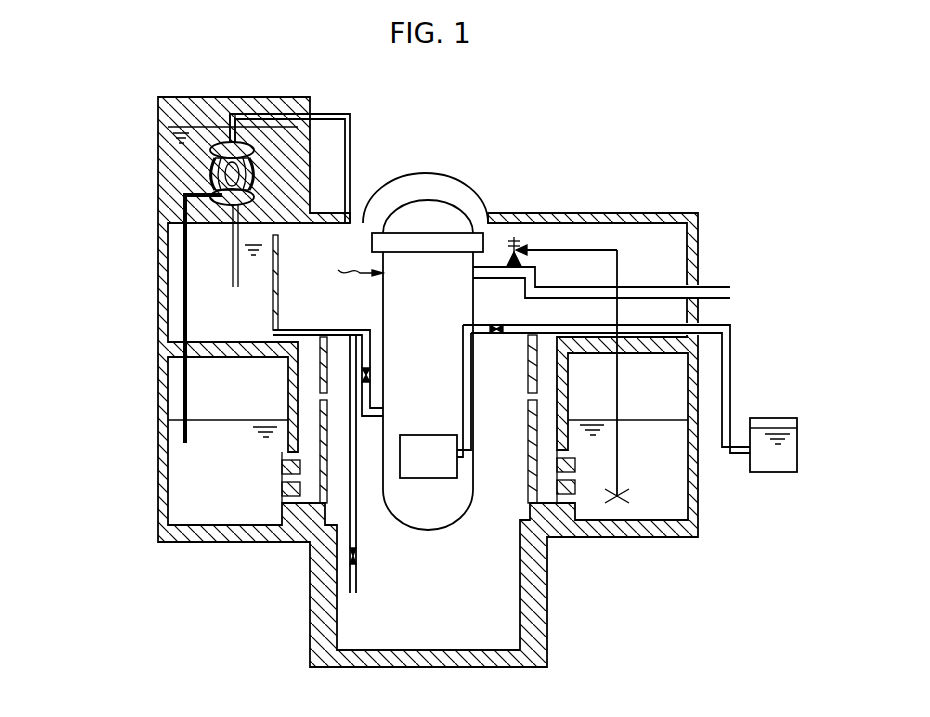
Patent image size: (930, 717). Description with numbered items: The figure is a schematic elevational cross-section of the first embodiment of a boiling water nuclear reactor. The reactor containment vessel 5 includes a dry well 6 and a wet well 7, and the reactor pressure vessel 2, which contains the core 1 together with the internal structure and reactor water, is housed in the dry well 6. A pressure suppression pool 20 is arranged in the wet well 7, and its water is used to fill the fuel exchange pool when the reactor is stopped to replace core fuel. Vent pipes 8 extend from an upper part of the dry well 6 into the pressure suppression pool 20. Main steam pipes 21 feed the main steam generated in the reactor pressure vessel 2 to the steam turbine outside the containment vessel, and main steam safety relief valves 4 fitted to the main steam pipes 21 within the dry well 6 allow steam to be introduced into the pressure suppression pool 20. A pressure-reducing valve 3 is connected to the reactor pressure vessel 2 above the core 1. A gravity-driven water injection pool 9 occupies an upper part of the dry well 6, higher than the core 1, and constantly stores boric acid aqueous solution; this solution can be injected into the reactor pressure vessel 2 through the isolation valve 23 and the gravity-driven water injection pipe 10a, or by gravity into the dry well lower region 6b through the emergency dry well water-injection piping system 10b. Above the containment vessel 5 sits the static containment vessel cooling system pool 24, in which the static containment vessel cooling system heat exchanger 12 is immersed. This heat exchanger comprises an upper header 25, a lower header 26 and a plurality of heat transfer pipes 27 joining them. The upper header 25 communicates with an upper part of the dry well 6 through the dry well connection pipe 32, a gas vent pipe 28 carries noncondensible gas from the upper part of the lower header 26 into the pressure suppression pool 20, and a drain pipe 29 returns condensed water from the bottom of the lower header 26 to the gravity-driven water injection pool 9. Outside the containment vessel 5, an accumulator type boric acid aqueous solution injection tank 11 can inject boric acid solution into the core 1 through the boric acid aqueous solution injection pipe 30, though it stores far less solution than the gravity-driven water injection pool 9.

The core 1 is at (420, 441).
The reactor pressure vessel 2 is at (383, 327).
The pressure-reducing valve 3 is at (352, 272).
The main steam safety relief valve 4 is at (530, 253).
The reactor containment vessel 5 is at (428, 382).
The dry well 6 is at (428, 382).
The dry well lower region 6b is at (498, 595).
The wet well 7 is at (653, 405).
The vent pipe 8 is at (546, 384).
The gravity-driven water injection pool 9 is at (177, 305).
The gravity-driven water injection pipe 10a is at (367, 403).
The emergency dry well water-injection piping system 10b is at (353, 510).
The accumulator type boric acid aqueous solution injection tank 11 is at (783, 418).
The static containment vessel cooling system heat exchanger 12 is at (253, 215).
The pressure suppression pool 20 is at (658, 500).
The main steam pipe 21 is at (710, 287).
The isolation valve 23 is at (383, 368).
The static containment vessel cooling system pool 24 is at (178, 192).
The upper header 25 is at (257, 150).
The lower header 26 is at (257, 200).
The heat transfer pipe 27 is at (207, 170).
The gas vent pipe 28 is at (183, 397).
The drain pipe 29 is at (230, 265).
The boric acid aqueous solution injection pipe 30 is at (733, 360).
The dry well connection pipe 32 is at (353, 127).